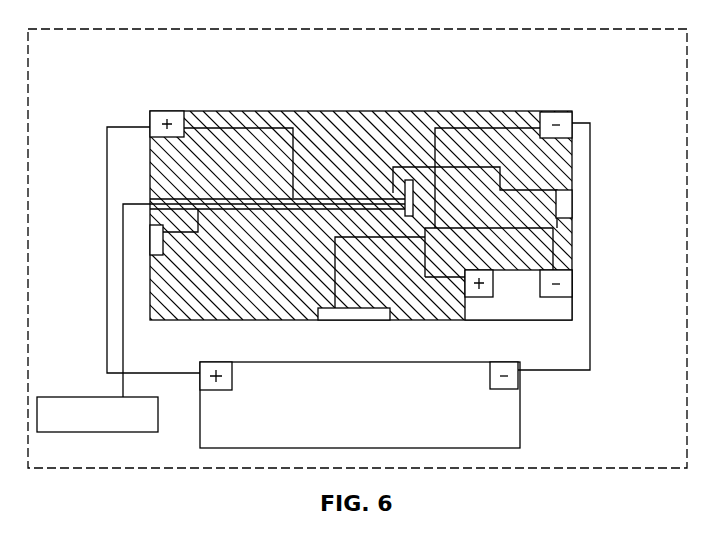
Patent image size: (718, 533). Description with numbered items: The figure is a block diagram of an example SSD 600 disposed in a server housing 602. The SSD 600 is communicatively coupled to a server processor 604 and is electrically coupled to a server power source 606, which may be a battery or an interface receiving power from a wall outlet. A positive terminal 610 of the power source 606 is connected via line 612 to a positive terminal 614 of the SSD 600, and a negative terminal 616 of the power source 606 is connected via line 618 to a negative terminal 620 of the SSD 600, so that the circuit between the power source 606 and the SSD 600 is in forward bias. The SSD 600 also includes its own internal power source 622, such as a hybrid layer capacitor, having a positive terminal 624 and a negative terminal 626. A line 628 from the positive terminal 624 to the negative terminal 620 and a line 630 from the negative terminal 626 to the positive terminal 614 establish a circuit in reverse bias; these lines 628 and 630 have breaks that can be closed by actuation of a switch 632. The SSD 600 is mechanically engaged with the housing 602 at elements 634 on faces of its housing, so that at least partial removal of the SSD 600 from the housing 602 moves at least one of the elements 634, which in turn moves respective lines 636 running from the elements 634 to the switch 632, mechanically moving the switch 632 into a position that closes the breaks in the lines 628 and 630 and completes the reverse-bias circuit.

The SSD 600 is at (278, 110).
The server housing 602 is at (682, 52).
The server processor 604 is at (131, 432).
The server power source 606 is at (512, 443).
The positive terminal 610 is at (218, 362).
The line 612 is at (107, 164).
The positive terminal 614 is at (150, 117).
The negative terminal 616 is at (505, 362).
The line 618 is at (594, 170).
The negative terminal 620 is at (553, 112).
The internal power source 622 is at (518, 295).
The positive terminal 624 is at (468, 270).
The negative terminal 626 is at (565, 278).
The line 628 is at (462, 134).
The line 630 is at (480, 229).
The switch 632 is at (403, 183).
The elements 634 is at (163, 247).
The lines 636 is at (240, 216).